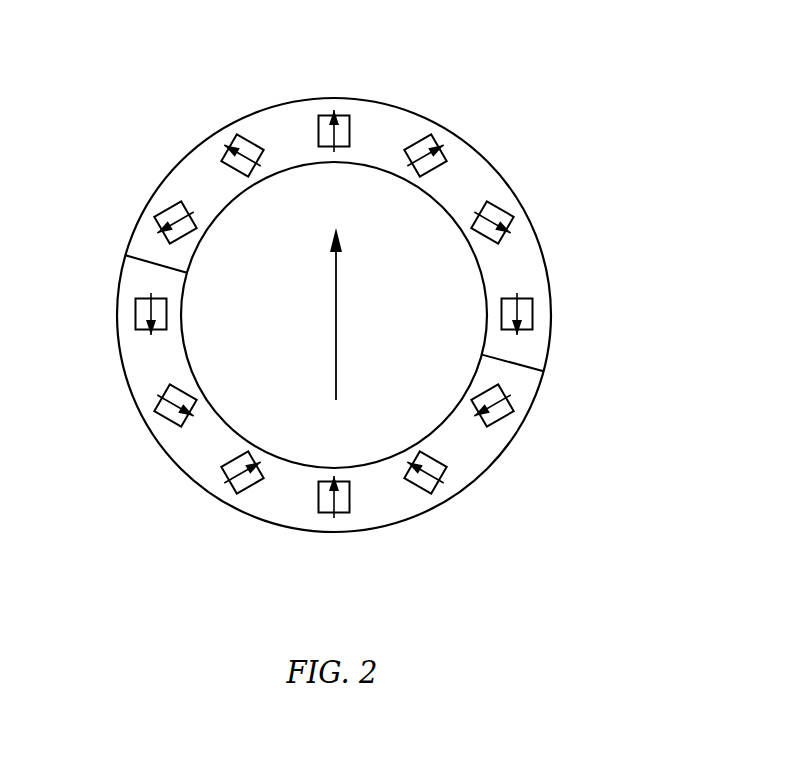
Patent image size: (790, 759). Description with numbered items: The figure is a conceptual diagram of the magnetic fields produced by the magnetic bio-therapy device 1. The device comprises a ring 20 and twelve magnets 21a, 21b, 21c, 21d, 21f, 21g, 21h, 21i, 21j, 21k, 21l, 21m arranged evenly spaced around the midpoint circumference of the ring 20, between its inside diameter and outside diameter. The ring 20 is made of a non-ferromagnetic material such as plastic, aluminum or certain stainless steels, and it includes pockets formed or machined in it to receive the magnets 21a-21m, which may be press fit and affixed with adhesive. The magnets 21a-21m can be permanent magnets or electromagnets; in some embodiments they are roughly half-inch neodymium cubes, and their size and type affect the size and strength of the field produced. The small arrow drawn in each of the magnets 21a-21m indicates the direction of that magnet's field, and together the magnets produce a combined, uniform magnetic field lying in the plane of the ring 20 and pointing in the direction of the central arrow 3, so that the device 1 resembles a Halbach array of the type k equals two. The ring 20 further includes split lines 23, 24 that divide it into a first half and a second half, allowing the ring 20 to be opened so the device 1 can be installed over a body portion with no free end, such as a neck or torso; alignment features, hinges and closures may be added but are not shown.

The magnetic bio-therapy device 1 is at (335, 311).
The ring 20 is at (188, 173).
The magnet 21a is at (348, 120).
The magnet 21b is at (258, 135).
The magnet 21c is at (167, 210).
The magnet 21d is at (137, 310).
The magnet 21f is at (165, 417).
The magnet 21g is at (260, 490).
The magnet 21h is at (318, 503).
The magnet 21i is at (413, 490).
The magnet 21j is at (508, 422).
The magnet 21k is at (535, 313).
The magnet 21l is at (504, 208).
The magnet 21m is at (414, 138).
The split line 23 is at (132, 259).
The split line 24 is at (527, 369).
The arrow 3 is at (337, 298).